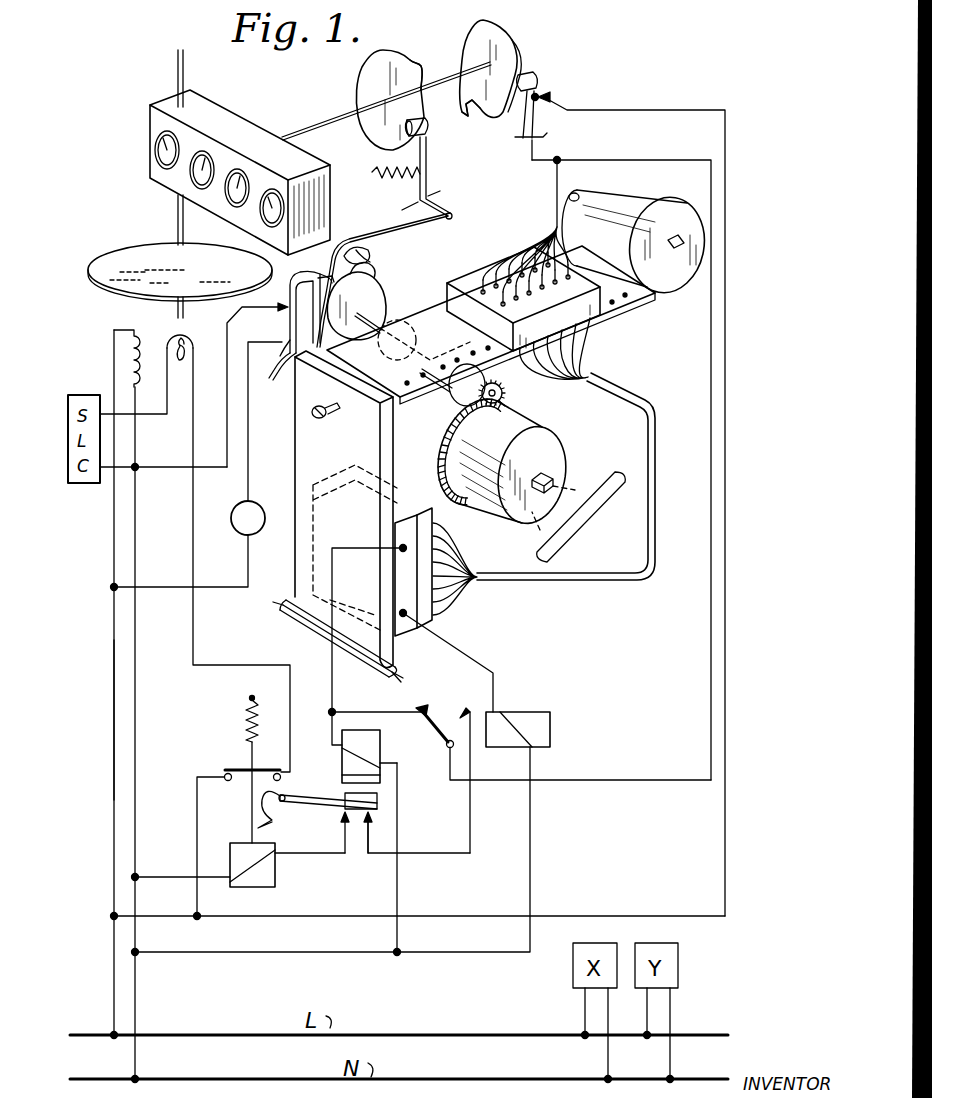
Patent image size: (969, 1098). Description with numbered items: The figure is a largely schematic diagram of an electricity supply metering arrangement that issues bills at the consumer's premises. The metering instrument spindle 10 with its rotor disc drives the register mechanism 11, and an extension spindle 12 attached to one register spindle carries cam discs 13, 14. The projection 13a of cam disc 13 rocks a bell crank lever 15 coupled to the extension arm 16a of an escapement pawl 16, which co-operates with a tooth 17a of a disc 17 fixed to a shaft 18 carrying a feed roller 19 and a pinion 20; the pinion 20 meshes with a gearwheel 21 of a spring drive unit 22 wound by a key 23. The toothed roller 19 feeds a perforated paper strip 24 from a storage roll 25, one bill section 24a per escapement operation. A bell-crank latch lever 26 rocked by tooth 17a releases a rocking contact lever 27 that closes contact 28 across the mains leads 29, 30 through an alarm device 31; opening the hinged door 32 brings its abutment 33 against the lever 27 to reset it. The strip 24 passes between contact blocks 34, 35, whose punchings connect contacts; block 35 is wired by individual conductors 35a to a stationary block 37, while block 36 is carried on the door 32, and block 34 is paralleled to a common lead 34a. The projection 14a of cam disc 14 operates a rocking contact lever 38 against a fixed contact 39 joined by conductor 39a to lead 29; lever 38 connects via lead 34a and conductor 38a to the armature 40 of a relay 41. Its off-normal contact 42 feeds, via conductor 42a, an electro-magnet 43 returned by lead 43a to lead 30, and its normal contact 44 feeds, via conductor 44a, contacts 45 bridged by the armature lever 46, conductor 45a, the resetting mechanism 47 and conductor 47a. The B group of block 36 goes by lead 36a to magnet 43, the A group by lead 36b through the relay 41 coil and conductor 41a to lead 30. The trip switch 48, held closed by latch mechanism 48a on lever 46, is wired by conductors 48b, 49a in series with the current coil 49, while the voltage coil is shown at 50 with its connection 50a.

The metering instrument spindle 10 is at (177, 214).
The register mechanism 11 is at (247, 133).
The extension spindle 12 is at (328, 122).
The cam disc 13 is at (366, 82).
The projection 13a is at (420, 64).
The second cam disc 14 is at (512, 52).
The projection 14a is at (467, 124).
The bell crank lever 15 is at (447, 164).
The escapement pawl 16 is at (372, 256).
The extension arm 16a is at (392, 230).
The disc 17 is at (376, 296).
The tooth 17a is at (376, 271).
The shaft 18 is at (384, 339).
The feed roller 19 is at (454, 393).
The pinion 20 is at (505, 392).
The gearwheel 21 is at (440, 456).
The spring drive unit 22 is at (552, 458).
The key 23 is at (605, 507).
The paper strip 24 is at (656, 291).
The bill-forming section 24a is at (368, 398).
The storage roll 25 is at (665, 208).
The bell-crank latch lever 26 is at (304, 274).
The rocking contact lever 27 is at (283, 382).
The contact 28 is at (275, 315).
The supply main input lead 29 is at (114, 974).
The supply main input lead 30 is at (138, 973).
The alarm device 31 is at (238, 537).
The hinged door 32 is at (294, 457).
The abutment 33 is at (322, 397).
The contact block 34 is at (462, 284).
The common lead 34a is at (554, 227).
The contact block 35 is at (592, 328).
The individual conductors 35a is at (592, 358).
The contact block 36 is at (402, 630).
The lead 36a is at (328, 672).
The lead 36b is at (471, 658).
The contact block 37 is at (436, 613).
The rocking contact lever 38 is at (536, 126).
The conductor 38a is at (635, 160).
The fixed contact 39 is at (553, 94).
The conductor 39a is at (672, 104).
The armature 40 is at (444, 736).
The relay 41 is at (530, 712).
The conductor 41a is at (531, 868).
The off-normal contact 42 is at (418, 704).
The conductor 42a is at (352, 711).
The electro-magnet 43 is at (341, 754).
The lead 43a is at (398, 820).
The normal contact 44 is at (468, 710).
The conductor 44a is at (470, 853).
The contacts 45 is at (358, 846).
The conductor 45a is at (328, 855).
The armature lever 46 is at (318, 812).
The resetting mechanism 47 is at (276, 886).
The conductor 47a is at (168, 876).
The trip switch 48 is at (248, 798).
The latch mechanism 48a is at (283, 784).
The conductor 48b is at (195, 804).
The current coil 49 is at (190, 365).
The conductor 49a is at (248, 660).
The voltage coil 50 is at (134, 324).
The conductor 50a is at (140, 716).